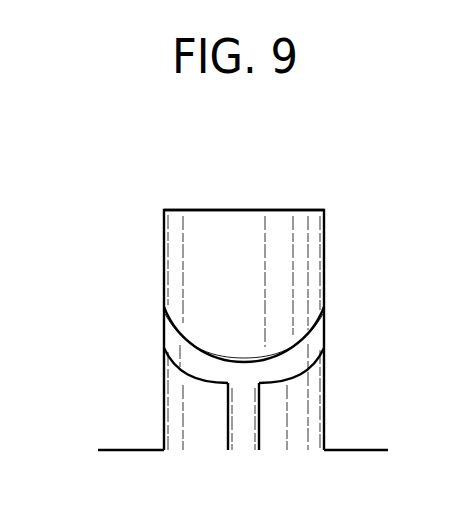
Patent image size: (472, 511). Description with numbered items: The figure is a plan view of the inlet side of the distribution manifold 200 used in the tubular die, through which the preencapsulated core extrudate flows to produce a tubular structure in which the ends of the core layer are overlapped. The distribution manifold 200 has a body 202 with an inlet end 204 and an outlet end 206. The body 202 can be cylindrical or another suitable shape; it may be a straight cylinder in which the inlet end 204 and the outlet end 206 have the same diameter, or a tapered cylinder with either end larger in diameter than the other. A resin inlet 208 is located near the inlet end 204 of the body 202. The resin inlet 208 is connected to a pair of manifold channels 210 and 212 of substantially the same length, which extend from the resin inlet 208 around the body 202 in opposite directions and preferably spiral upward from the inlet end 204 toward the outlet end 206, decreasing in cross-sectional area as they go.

The distribution manifold 200 is at (155, 222).
The body 202 is at (203, 272).
The inlet end 204 is at (164, 432).
The outlet end 206 is at (296, 210).
The resin inlet 208 is at (260, 420).
The manifold channel 210 is at (312, 348).
The manifold channel 212 is at (173, 345).